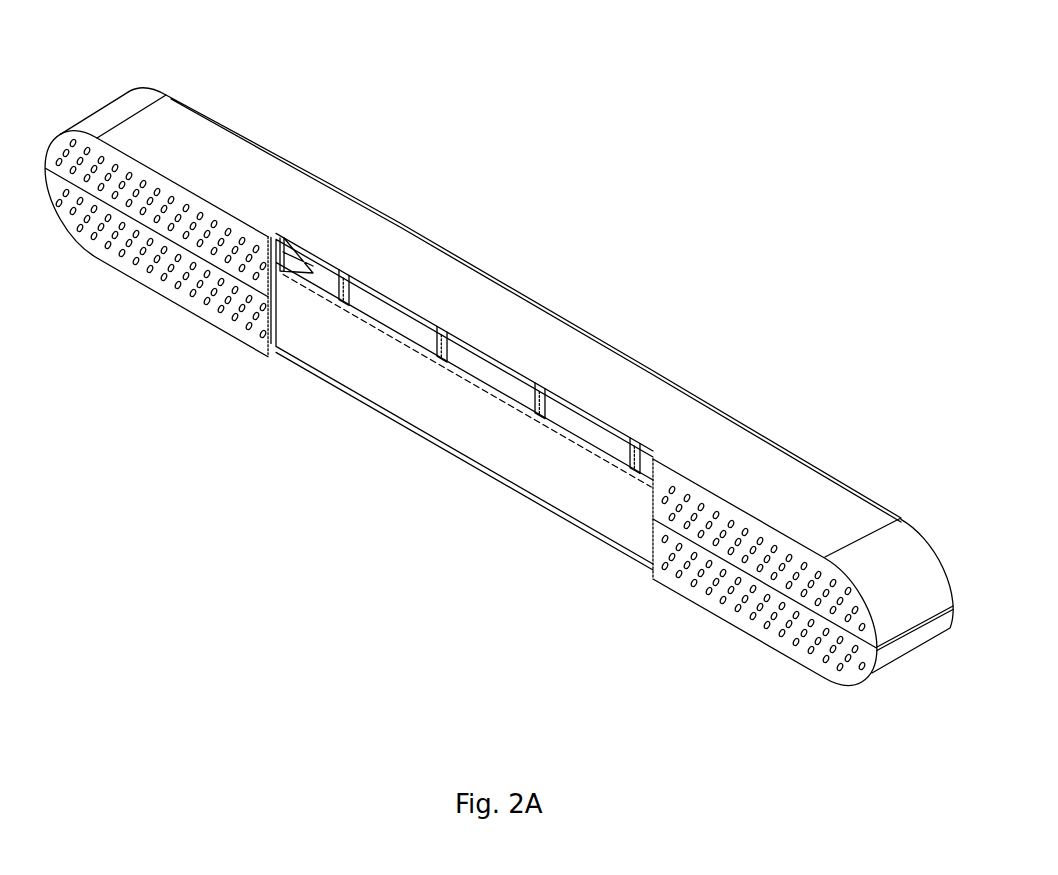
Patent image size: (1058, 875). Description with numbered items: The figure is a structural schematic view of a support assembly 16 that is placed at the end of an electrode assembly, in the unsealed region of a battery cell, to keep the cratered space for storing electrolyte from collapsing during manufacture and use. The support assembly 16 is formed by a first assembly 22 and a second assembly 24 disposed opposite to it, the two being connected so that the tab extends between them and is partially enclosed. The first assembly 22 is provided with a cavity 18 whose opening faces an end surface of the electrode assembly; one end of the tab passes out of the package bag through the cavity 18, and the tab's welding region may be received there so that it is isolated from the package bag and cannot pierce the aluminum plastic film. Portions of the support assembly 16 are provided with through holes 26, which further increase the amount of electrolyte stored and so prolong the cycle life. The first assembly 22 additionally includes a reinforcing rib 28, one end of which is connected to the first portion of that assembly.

The support assembly 16 is at (523, 242).
The cavity 18 is at (423, 395).
The first assembly 22 is at (190, 133).
The second assembly 24 is at (140, 250).
The through hole 26 is at (770, 547).
The reinforcing rib 28 is at (538, 397).